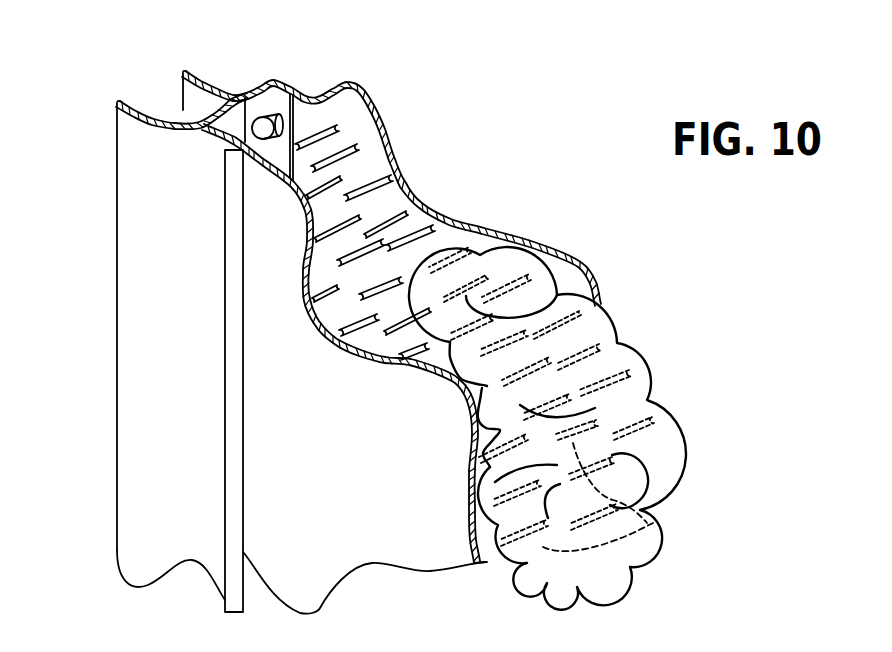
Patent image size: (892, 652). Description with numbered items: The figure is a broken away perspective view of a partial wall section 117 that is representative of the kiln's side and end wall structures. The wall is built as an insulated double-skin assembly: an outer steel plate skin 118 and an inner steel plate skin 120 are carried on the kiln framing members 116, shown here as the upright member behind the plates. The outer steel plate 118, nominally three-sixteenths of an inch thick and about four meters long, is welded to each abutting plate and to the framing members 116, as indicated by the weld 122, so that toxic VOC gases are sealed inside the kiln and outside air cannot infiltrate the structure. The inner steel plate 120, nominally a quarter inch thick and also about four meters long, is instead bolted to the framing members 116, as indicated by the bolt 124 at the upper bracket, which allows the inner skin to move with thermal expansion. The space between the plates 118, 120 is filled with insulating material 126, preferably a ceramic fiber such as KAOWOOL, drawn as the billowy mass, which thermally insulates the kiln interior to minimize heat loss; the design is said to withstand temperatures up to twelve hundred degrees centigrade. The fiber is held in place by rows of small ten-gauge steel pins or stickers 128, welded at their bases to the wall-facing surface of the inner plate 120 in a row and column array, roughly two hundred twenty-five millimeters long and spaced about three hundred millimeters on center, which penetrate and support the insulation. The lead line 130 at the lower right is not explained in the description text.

The kiln framing member 116 is at (132, 254).
The partial wall section 117 is at (524, 178).
The outer steel plate skin 118 is at (408, 556).
The inner steel plate skin 120 is at (535, 242).
The weld 122 is at (230, 368).
The bolt 124 is at (257, 127).
The insulating material 126 is at (628, 358).
The stickers 128 is at (367, 260).
The conduit 130 is at (715, 651).